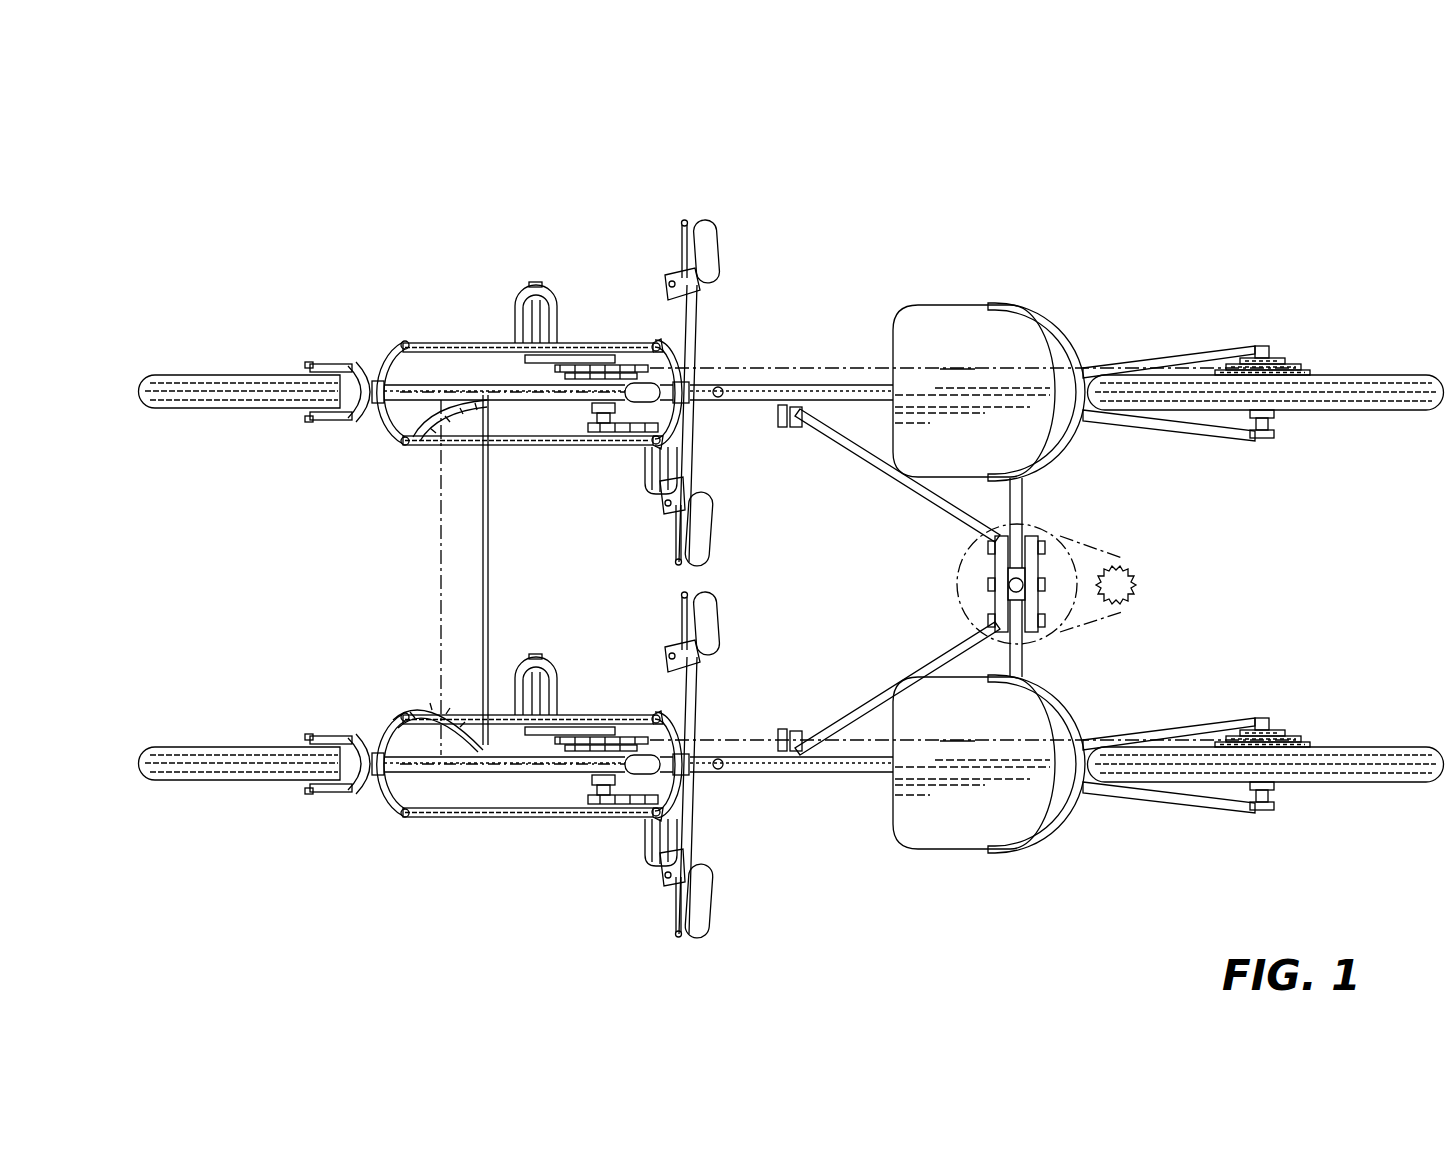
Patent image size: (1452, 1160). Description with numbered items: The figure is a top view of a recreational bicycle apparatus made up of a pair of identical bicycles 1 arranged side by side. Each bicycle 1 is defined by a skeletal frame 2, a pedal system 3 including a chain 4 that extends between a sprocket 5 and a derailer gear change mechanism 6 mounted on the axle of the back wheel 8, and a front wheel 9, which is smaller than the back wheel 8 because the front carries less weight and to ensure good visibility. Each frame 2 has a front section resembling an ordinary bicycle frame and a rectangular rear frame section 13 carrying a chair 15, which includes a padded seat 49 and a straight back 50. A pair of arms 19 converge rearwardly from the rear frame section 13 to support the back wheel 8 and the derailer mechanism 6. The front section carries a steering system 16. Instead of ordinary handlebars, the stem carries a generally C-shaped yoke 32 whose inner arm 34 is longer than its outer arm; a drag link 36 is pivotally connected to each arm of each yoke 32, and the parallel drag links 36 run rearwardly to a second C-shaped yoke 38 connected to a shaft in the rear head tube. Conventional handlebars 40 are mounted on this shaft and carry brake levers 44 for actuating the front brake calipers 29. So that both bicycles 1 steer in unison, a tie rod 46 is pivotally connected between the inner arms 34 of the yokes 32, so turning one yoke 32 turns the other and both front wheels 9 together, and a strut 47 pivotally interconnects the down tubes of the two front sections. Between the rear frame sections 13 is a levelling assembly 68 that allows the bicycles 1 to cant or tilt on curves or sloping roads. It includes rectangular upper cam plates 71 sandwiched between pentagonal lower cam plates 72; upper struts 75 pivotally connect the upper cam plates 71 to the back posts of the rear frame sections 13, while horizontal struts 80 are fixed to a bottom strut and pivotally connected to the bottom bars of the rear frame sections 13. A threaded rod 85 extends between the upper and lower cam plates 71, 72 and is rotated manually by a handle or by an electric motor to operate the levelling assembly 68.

The bicycle 1 is at (1146, 568).
The skeletal frame 2 is at (800, 341).
The pedal system 3 is at (548, 292).
The chain 4 is at (834, 365).
The sprocket 5 is at (626, 375).
The derailer gear change mechanism 6 is at (1298, 358).
The back wheel 8 is at (1362, 408).
The front wheel 9 is at (178, 376).
The rear frame section 13 is at (920, 305).
The chair 15 is at (956, 305).
The steering system 16 is at (429, 282).
The arms 19 is at (1168, 415).
The front brake calipers 29 is at (344, 364).
The yoke 32 is at (372, 428).
The inner arm 34 is at (428, 450).
The drag link 36 is at (512, 345).
The second yoke 38 is at (658, 375).
The handlebars 40 is at (695, 345).
The brake levers 44 is at (682, 245).
The tie rod 46 is at (490, 572).
The strut 47 is at (412, 578).
The padded seat 49 is at (957, 541).
The straight back 50 is at (1043, 330).
The levelling assembly 68 is at (1037, 559).
The upper cam plates 71 is at (1008, 572).
The lower cam plates 72 is at (1010, 604).
The upper struts 75 is at (1020, 500).
The horizontal struts 80 is at (872, 700).
The threaded rod 85 is at (1048, 582).